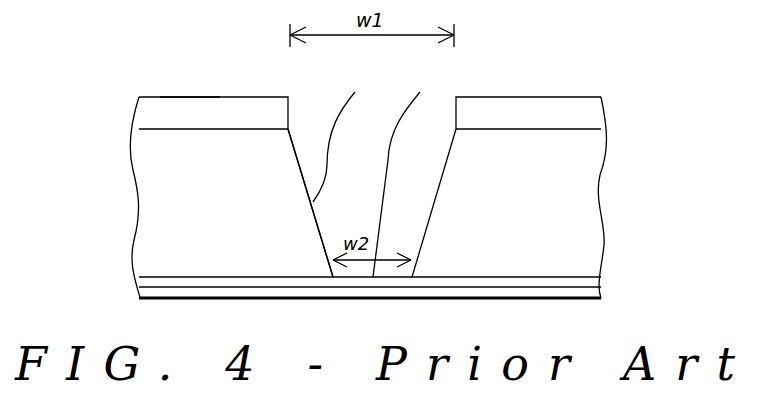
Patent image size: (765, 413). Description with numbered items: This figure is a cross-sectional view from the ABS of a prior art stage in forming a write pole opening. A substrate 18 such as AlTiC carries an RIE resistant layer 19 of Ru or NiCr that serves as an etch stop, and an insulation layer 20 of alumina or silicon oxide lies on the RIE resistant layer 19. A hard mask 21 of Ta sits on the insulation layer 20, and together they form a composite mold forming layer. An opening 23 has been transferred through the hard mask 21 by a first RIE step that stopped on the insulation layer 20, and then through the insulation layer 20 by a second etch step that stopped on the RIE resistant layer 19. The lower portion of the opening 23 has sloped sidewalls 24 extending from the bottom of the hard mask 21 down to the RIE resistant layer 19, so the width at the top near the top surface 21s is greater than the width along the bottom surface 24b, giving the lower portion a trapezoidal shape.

The substrate 18 is at (139, 297).
The RIE resistant layer 19 is at (585, 277).
The insulation layer 20 is at (585, 208).
The hard mask 21 is at (145, 115).
The top surface 21s is at (188, 97).
The opening 23 is at (323, 114).
The sloped sidewalls 24 is at (339, 134).
The bottom surface 24b is at (404, 171).